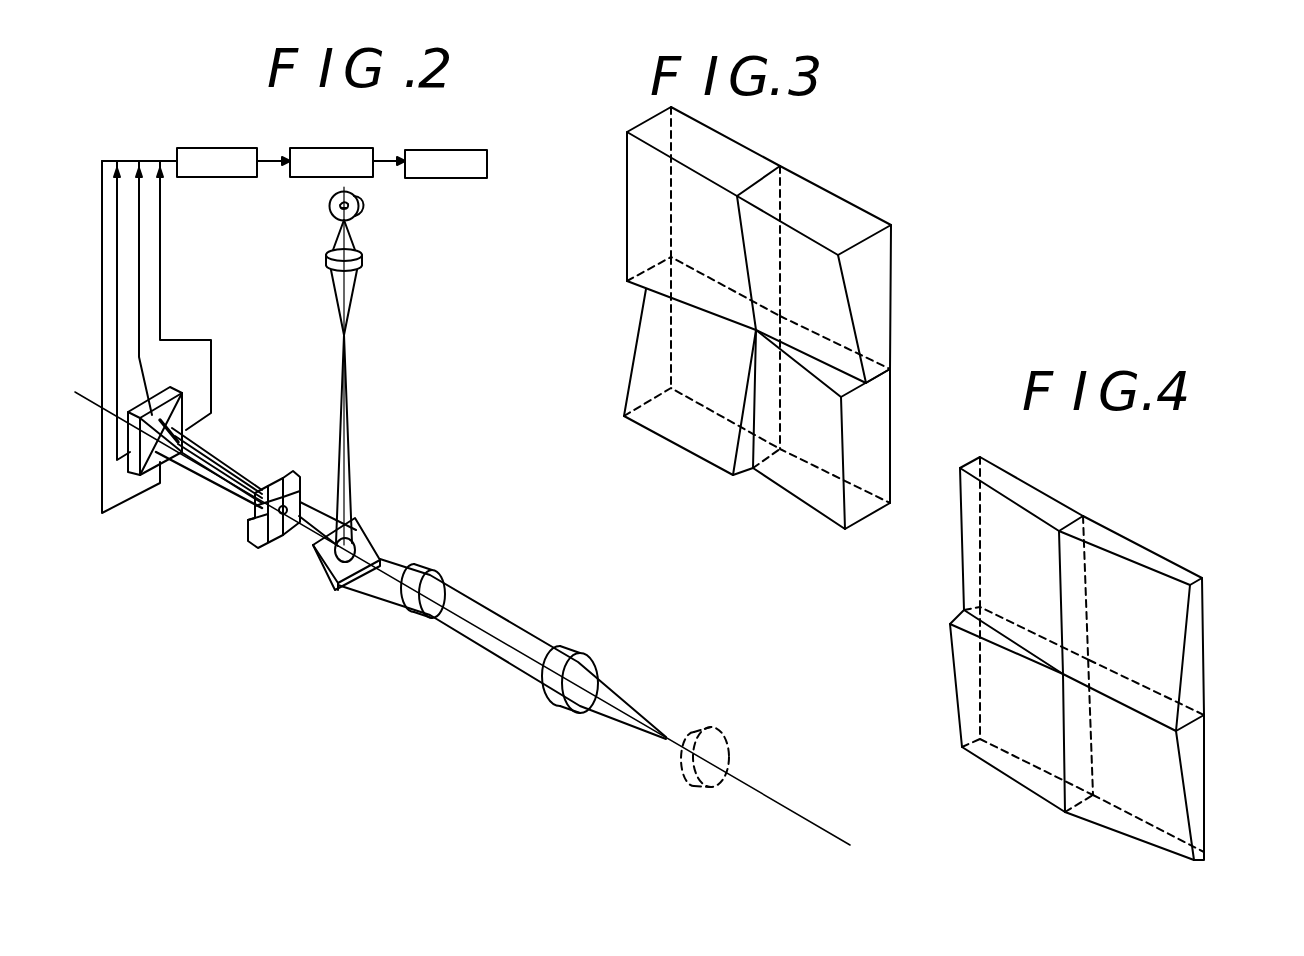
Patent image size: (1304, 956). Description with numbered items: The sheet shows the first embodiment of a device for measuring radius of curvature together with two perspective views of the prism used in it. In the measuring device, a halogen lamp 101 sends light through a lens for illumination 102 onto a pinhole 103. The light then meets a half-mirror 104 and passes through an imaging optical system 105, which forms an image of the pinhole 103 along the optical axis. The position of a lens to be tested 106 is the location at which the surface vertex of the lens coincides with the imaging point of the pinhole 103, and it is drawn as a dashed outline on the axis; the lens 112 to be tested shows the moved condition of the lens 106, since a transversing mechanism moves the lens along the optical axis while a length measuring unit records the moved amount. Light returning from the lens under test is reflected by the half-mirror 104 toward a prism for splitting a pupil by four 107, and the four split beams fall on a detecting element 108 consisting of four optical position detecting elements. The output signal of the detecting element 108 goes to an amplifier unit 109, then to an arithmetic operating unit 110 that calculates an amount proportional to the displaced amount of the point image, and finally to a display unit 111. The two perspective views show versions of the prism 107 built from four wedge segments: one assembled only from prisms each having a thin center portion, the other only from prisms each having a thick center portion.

In FIG. 2, the halogen lamp 101 is at (359, 206).
In FIG. 2, the lens for illumination 102 is at (363, 256).
In FIG. 2, the pinhole 103 is at (338, 340).
In FIG. 2, the half-mirror 104 is at (363, 538).
In FIG. 2, the imaging optical system 105 is at (441, 582).
In FIG. 2, the position of a lens to be tested 106 is at (728, 744).
In FIG. 2, the prism for splitting a pupil by four 107 is at (249, 541).
In FIG. 3, the prism for splitting a pupil by four 107 is at (766, 317).
In FIG. 4, the prism for splitting a pupil by four 107 is at (1122, 649).
In FIG. 2, the detecting element 108 is at (167, 393).
In FIG. 2, the amplifier unit 109 is at (259, 139).
In FIG. 2, the arithmetic operating unit 110 is at (371, 139).
In FIG. 2, the display unit 111 is at (470, 150).
In FIG. 2, the lens to be tested 112 is at (597, 668).